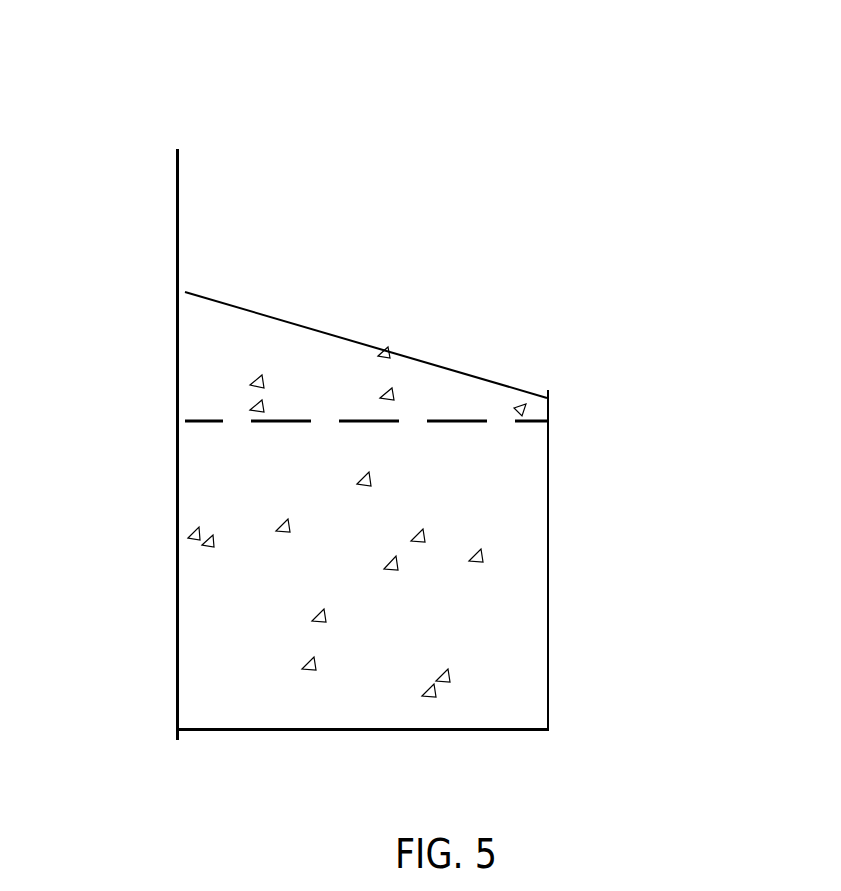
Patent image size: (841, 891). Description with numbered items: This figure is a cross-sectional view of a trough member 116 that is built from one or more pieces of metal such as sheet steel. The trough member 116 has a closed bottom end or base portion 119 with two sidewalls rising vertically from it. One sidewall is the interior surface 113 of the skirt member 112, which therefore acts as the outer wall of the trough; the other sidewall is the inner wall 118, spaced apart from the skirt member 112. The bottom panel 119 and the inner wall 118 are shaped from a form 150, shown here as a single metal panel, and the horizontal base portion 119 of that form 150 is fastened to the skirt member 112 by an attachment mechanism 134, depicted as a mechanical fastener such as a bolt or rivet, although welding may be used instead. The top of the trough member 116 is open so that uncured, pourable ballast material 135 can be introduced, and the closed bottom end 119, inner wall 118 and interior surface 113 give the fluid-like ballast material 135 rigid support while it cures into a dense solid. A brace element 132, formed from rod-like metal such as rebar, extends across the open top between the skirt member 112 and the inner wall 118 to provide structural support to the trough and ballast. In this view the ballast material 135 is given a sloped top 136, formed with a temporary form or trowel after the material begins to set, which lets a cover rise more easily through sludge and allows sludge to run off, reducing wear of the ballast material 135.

The trough member 116 is at (222, 70).
The skirt member 112 is at (163, 472).
The interior surface of the skirt member 113 is at (184, 622).
The attachment mechanism 134 is at (180, 718).
The base portion 119 is at (352, 729).
The inner wall 118 is at (557, 586).
The form 150 is at (562, 693).
The brace element 132 is at (278, 418).
The sloped top 136 is at (397, 273).
The ballast material 135 is at (500, 511).